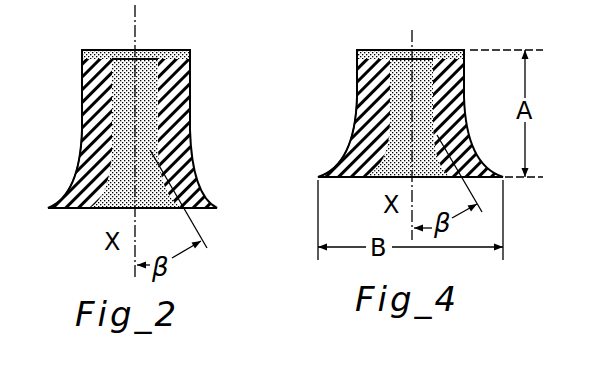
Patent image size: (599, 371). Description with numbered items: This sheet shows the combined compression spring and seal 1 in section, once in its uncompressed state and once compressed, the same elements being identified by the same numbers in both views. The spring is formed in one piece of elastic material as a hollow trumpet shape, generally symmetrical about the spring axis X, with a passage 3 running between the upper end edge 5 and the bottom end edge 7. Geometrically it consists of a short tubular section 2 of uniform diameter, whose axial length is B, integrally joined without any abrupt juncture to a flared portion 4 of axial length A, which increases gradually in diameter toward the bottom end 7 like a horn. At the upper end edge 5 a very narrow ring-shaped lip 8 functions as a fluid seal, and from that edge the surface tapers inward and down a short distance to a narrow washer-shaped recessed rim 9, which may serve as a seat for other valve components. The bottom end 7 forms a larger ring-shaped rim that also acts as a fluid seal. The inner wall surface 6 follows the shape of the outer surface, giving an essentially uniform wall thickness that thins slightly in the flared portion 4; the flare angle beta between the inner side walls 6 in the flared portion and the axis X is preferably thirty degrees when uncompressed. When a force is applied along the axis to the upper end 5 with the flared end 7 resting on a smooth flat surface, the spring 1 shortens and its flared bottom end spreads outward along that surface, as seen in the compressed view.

In FIG. 2, the combined compression spring and seal 1 is at (199, 140).
In FIG. 4, the combined compression spring and seal 1 is at (473, 100).
In FIG. 2, the tubular section 2 is at (82, 124).
In FIG. 4, the tubular section 2 is at (357, 94).
In FIG. 2, the passage 3 is at (112, 90).
In FIG. 2, the flared portion 4 is at (58, 205).
In FIG. 4, the flared portion 4 is at (326, 168).
In FIG. 2, the upper end edge 5 is at (160, 48).
In FIG. 4, the upper end edge 5 is at (435, 48).
In FIG. 2, the inner wall surface 6 is at (132, 223).
In FIG. 4, the inner wall surface 6 is at (470, 142).
In FIG. 2, the bottom end edge 7 is at (192, 199).
In FIG. 4, the bottom end edge 7 is at (324, 180).
In FIG. 2, the lip 8 is at (193, 44).
In FIG. 4, the lip 8 is at (464, 52).
In FIG. 2, the recessed rim 9 is at (117, 57).
In FIG. 4, the recessed rim 9 is at (392, 56).